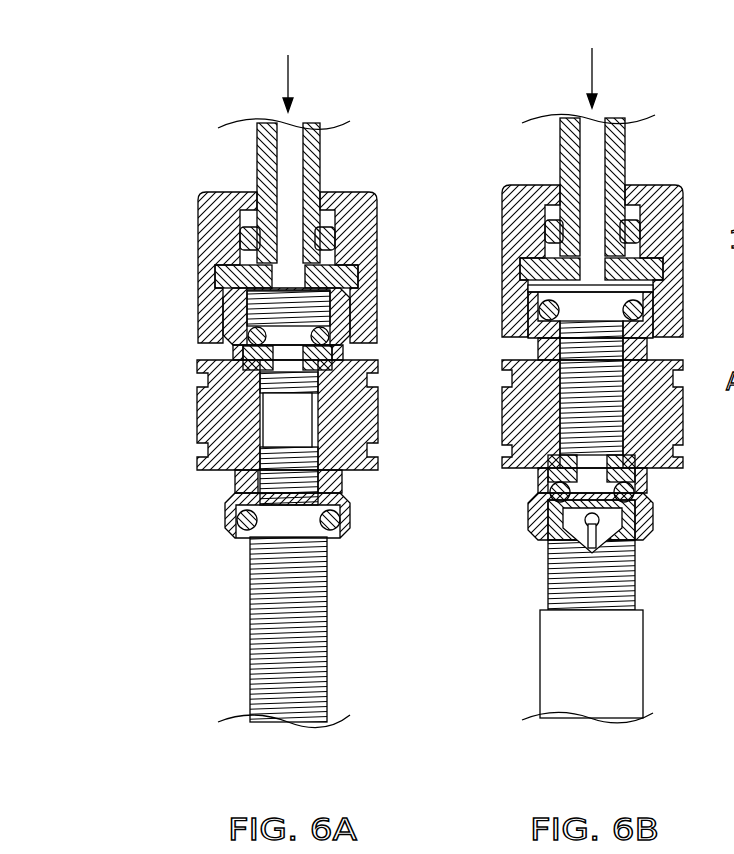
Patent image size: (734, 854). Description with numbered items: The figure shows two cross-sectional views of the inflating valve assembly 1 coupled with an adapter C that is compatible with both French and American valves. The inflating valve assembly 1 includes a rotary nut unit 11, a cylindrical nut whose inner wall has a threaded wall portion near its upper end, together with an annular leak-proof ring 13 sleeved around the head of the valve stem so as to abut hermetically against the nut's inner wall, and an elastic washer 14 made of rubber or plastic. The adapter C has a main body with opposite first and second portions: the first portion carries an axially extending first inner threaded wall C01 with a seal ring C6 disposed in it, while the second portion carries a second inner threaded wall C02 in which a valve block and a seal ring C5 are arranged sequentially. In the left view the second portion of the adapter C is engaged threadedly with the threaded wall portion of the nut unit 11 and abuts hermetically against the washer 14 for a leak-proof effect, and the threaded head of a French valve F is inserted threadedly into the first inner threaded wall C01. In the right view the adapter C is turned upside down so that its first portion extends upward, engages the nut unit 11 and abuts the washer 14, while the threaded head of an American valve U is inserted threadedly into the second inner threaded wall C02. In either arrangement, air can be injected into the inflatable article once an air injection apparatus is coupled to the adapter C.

In FIG. 6A, the inflating valve assembly 1 is at (172, 246).
In FIG. 6B, the inflating valve assembly 1 is at (481, 249).
In FIG. 6A, the rotary nut unit 11 is at (198, 213).
In FIG. 6B, the rotary nut unit 11 is at (502, 205).
In FIG. 6A, the annular leak-proof ring 13 is at (232, 198).
In FIG. 6B, the annular leak-proof ring 13 is at (547, 192).
In FIG. 6A, the elastic washer 14 is at (215, 273).
In FIG. 6B, the elastic washer 14 is at (520, 265).
In FIG. 6A, the adapter C is at (172, 404).
In FIG. 6B, the adapter C is at (479, 398).
In FIG. 6A, the seal ring C5 is at (247, 337).
In FIG. 6B, the seal ring C5 is at (642, 488).
In FIG. 6A, the seal ring C6 is at (343, 523).
In FIG. 6B, the seal ring C6 is at (540, 307).
In FIG. 6A, the first inner threaded wall C01 is at (237, 493).
In FIG. 6B, the second inner threaded wall C02 is at (547, 517).
In FIG. 6A, the French valve F is at (229, 620).
In FIG. 6B, the American valve U is at (511, 661).